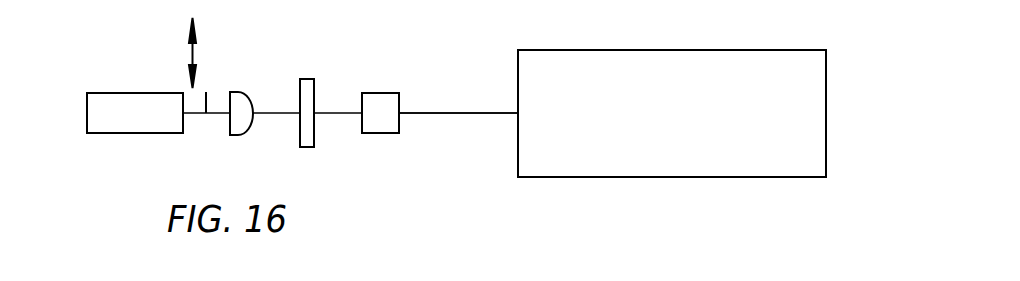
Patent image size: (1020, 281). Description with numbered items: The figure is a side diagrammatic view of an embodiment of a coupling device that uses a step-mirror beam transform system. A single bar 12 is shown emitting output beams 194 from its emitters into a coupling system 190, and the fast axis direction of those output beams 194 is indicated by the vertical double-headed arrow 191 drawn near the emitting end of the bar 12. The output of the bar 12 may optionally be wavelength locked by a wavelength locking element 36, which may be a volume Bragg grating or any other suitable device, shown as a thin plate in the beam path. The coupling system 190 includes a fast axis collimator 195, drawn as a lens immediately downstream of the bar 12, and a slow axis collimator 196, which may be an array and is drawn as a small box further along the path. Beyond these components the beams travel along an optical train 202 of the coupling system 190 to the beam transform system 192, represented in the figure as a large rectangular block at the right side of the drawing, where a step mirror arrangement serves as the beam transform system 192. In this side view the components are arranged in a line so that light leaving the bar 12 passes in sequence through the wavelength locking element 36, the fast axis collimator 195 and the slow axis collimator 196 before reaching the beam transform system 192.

The bar 12 is at (135, 133).
The wavelength locking element 36 is at (306, 147).
The coupling system 190 is at (430, 159).
The arrow 191 is at (191, 53).
The beam transform system 192 is at (687, 123).
The output beams 194 is at (206, 92).
The fast axis collimator 195 is at (228, 129).
The slow axis collimator 196 is at (379, 93).
The optical train 202 is at (458, 113).